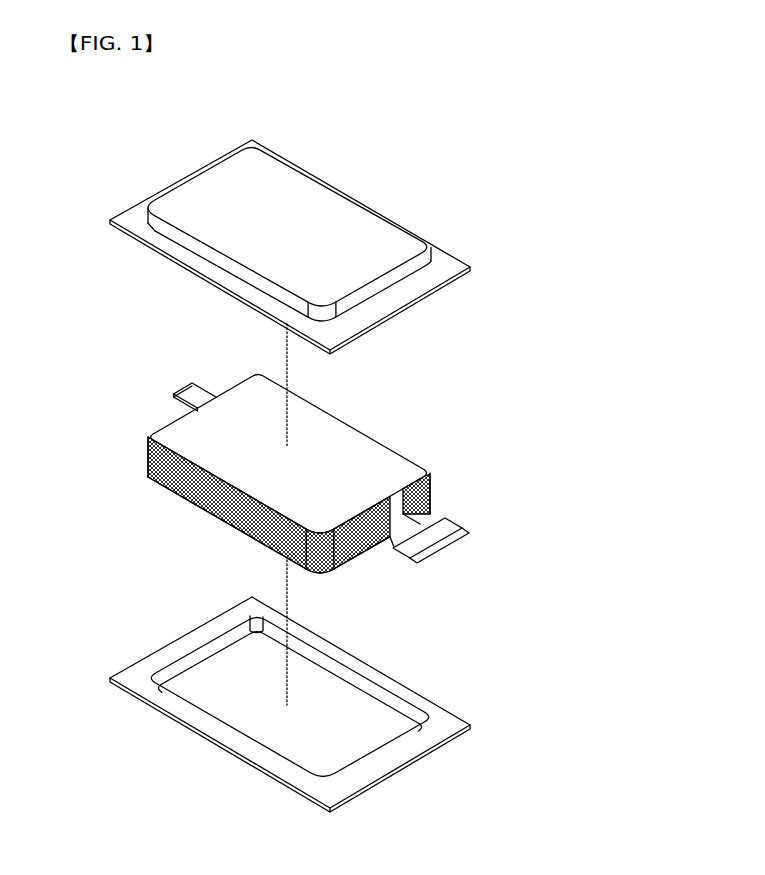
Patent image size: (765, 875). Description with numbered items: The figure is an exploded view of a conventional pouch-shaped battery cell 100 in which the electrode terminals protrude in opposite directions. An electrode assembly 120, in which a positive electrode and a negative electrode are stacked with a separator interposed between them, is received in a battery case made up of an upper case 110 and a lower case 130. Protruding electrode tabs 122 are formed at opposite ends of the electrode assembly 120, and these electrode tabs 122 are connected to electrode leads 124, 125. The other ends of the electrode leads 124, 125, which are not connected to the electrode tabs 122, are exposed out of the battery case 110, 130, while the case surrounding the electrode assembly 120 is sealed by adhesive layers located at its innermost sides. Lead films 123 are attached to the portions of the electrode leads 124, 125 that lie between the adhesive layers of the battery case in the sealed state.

The battery pack 100 is at (333, 466).
The upper case 110 is at (432, 226).
The electrode assembly 120 is at (323, 474).
The electrode tabs 122 is at (390, 537).
The lead films 123 is at (224, 409).
The electrode lead 124 is at (183, 384).
The electrode lead 125 is at (428, 567).
The lower case 130 is at (430, 698).